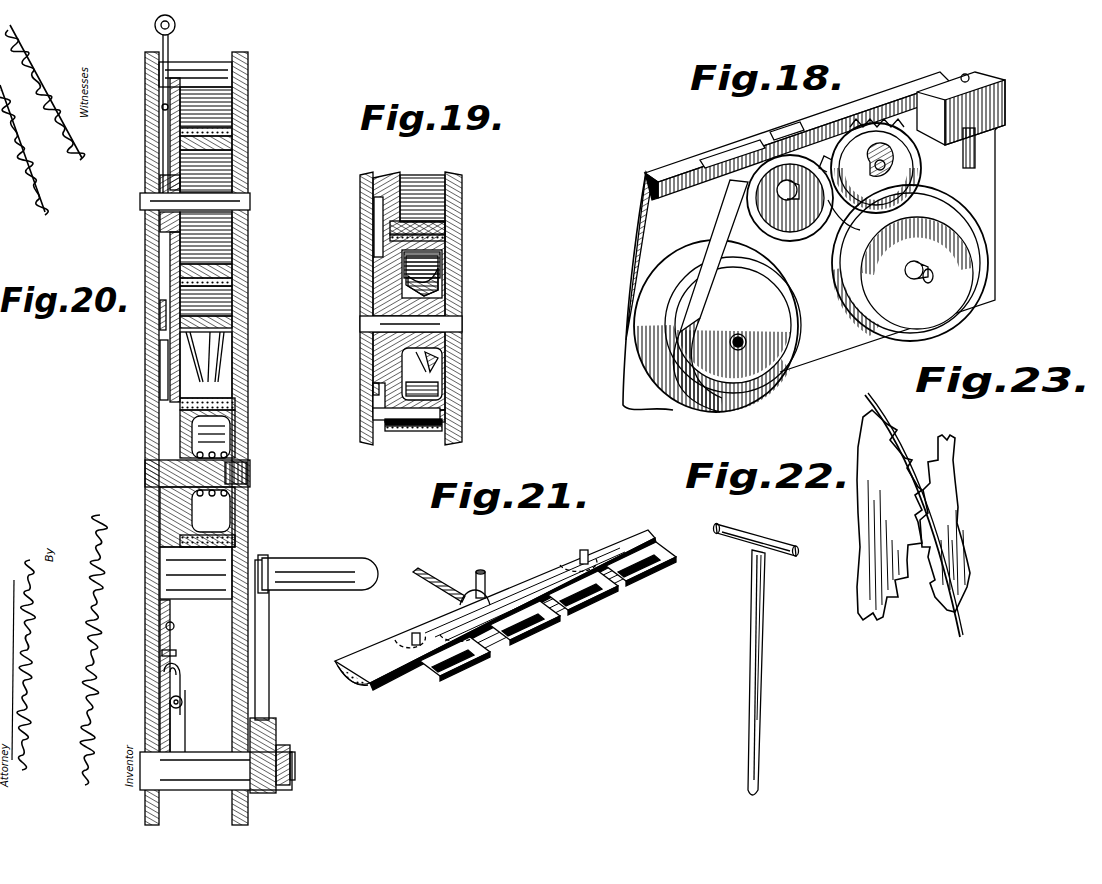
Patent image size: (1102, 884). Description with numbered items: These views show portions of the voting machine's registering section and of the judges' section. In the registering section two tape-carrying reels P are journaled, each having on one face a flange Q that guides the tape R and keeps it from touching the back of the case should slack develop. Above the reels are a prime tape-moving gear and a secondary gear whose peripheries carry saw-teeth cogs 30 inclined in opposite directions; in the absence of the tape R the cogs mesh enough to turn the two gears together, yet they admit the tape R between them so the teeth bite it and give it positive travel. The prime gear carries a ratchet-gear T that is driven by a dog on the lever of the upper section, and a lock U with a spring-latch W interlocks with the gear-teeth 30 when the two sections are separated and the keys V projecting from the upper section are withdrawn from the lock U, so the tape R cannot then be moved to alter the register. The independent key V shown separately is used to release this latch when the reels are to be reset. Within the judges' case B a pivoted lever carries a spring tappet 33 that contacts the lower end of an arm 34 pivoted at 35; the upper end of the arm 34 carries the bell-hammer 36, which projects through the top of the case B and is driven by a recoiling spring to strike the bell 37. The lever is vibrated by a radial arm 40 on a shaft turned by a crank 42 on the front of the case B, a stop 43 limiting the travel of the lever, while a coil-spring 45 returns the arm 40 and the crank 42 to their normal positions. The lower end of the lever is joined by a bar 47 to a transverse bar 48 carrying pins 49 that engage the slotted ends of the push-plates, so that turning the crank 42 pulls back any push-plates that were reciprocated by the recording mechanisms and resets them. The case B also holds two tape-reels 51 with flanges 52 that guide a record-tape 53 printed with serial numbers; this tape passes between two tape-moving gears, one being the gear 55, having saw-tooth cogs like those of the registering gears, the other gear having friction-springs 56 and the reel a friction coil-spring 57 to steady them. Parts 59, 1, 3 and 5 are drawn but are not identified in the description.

In FIG. 20, the bell-hammer 36 is at (176, 26).
In FIG. 20, the bell 37 is at (160, 108).
In FIG. 20, the plate 59 is at (206, 68).
In FIG. 20, the flanges 52 is at (190, 135).
In FIG. 20, the record-tape 53 is at (225, 133).
In FIG. 19, the record-tape 53 is at (448, 230).
In FIG. 20, the tape-reels 51 is at (225, 272).
In FIG. 20, the case B is at (248, 298).
In FIG. 19, the case B is at (460, 300).
In FIG. 20, the arm 34 is at (158, 318).
In FIG. 19, the arm 34 is at (412, 428).
In FIG. 20, the spring nose or tappet 33 is at (160, 352).
In FIG. 20, the tape-moving gear 55 is at (206, 349).
In FIG. 19, the tape-moving gear 55 is at (405, 185).
In FIG. 20, the friction coil-spring 57 is at (232, 408).
In FIG. 20, the saw-teeth cogs 30 is at (165, 455).
In FIG. 19, the saw-teeth cogs 30 is at (440, 432).
In FIG. 18, the saw-teeth cogs 30 is at (898, 212).
In FIG. 23, the saw-teeth cogs 30 is at (895, 462).
In FIG. 20, the crank 42 is at (340, 560).
In FIG. 20, the bar 47 is at (175, 625).
In FIG. 21, the bar 47 is at (465, 595).
In FIG. 20, the stop 43 is at (177, 653).
In FIG. 20, the coil-spring 45 is at (170, 704).
In FIG. 20, the radial arm 40 is at (181, 732).
In FIG. 19, the friction-springs 56 is at (440, 282).
In FIG. 19, the pivot 35 is at (374, 400).
In FIG. 21, the pins 49 is at (585, 552).
In FIG. 21, the transverse bar 48 is at (410, 635).
In FIG. 18, the ratchet-gear T is at (820, 128).
In FIG. 18, the lock U is at (945, 86).
In FIG. 18, the spring-latch W is at (920, 128).
In FIG. 18, the keys V is at (977, 145).
In FIG. 22, the keys V is at (752, 620).
In FIG. 18, the tape R is at (710, 222).
In FIG. 18, the tape-carrying reels P is at (775, 290).
In FIG. 18, the flange Q is at (790, 252).
In FIG. 18, the type plate 1 is at (912, 172).
In FIG. 23, the type plate 1 is at (940, 505).
In FIG. 18, the roller 3 is at (840, 215).
In FIG. 18, the scale mark 5 is at (745, 147).